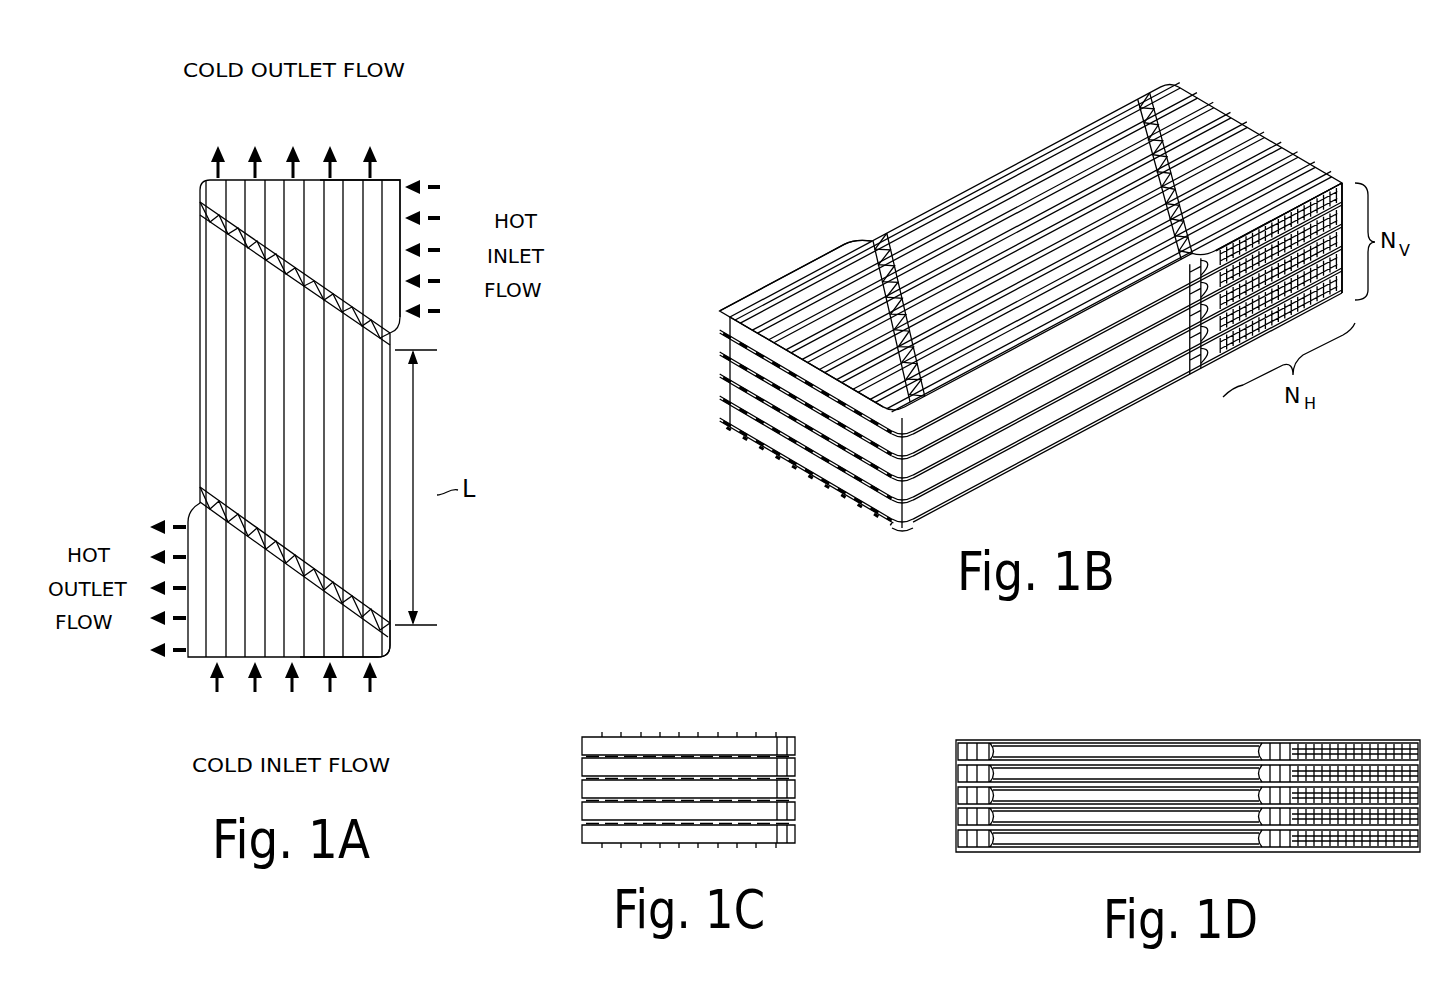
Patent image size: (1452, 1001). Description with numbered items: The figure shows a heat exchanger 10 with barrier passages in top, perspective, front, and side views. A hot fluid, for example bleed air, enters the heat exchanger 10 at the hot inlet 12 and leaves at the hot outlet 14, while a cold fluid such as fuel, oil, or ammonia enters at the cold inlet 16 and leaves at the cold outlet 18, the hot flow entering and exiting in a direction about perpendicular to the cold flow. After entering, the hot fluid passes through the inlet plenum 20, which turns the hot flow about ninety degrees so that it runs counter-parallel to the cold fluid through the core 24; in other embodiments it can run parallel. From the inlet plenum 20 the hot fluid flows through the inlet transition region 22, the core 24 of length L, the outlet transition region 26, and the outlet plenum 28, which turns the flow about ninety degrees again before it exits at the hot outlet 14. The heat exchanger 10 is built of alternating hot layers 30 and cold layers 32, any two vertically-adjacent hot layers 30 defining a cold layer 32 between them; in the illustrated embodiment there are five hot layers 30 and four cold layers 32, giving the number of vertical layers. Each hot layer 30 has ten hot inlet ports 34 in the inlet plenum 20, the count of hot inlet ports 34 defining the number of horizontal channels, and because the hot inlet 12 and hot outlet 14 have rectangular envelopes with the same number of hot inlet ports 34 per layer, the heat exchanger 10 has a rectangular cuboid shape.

In FIG. 1A, the heat exchanger 10 is at (264, 359).
In FIG. 1B, the heat exchanger 10 is at (1033, 276).
In FIG. 1C, the heat exchanger 10 is at (709, 745).
In FIG. 1D, the heat exchanger 10 is at (1167, 753).
In FIG. 1A, the hot inlet 12 is at (402, 203).
In FIG. 1B, the hot inlet 12 is at (1291, 311).
In FIG. 1C, the hot inlet 12 is at (790, 845).
In FIG. 1A, the hot outlet 14 is at (190, 540).
In FIG. 1B, the hot outlet 14 is at (784, 258).
In FIG. 1A, the cold inlet 16 is at (237, 665).
In FIG. 1B, the cold inlet 16 is at (807, 512).
In FIG. 1A, the cold outlet 18 is at (313, 160).
In FIG. 1B, the cold outlet 18 is at (1313, 174).
In FIG. 1A, the inlet plenum 20 is at (372, 190).
In FIG. 1B, the inlet plenum 20 is at (1232, 115).
In FIG. 1D, the inlet plenum 20 is at (1355, 752).
In FIG. 1B, the inlet transition region 22 is at (1137, 100).
In FIG. 1D, the inlet transition region 22 is at (1275, 740).
In FIG. 1A, the core 24 is at (200, 400).
In FIG. 1B, the core 24 is at (1000, 175).
In FIG. 1D, the core 24 is at (1128, 740).
In FIG. 1A, the outlet transition region 26 is at (385, 625).
In FIG. 1B, the outlet transition region 26 is at (885, 240).
In FIG. 1A, the outlet plenum 28 is at (373, 647).
In FIG. 1B, the outlet plenum 28 is at (815, 272).
In FIG. 1B, the hot layer 30 is at (730, 350).
In FIG. 1C, the hot layer 30 is at (582, 766).
In FIG. 1B, the cold layer 32 is at (730, 408).
In FIG. 1C, the cold layer 32 is at (582, 811).
In FIG. 1B, the hot inlet port 34 is at (1323, 193).